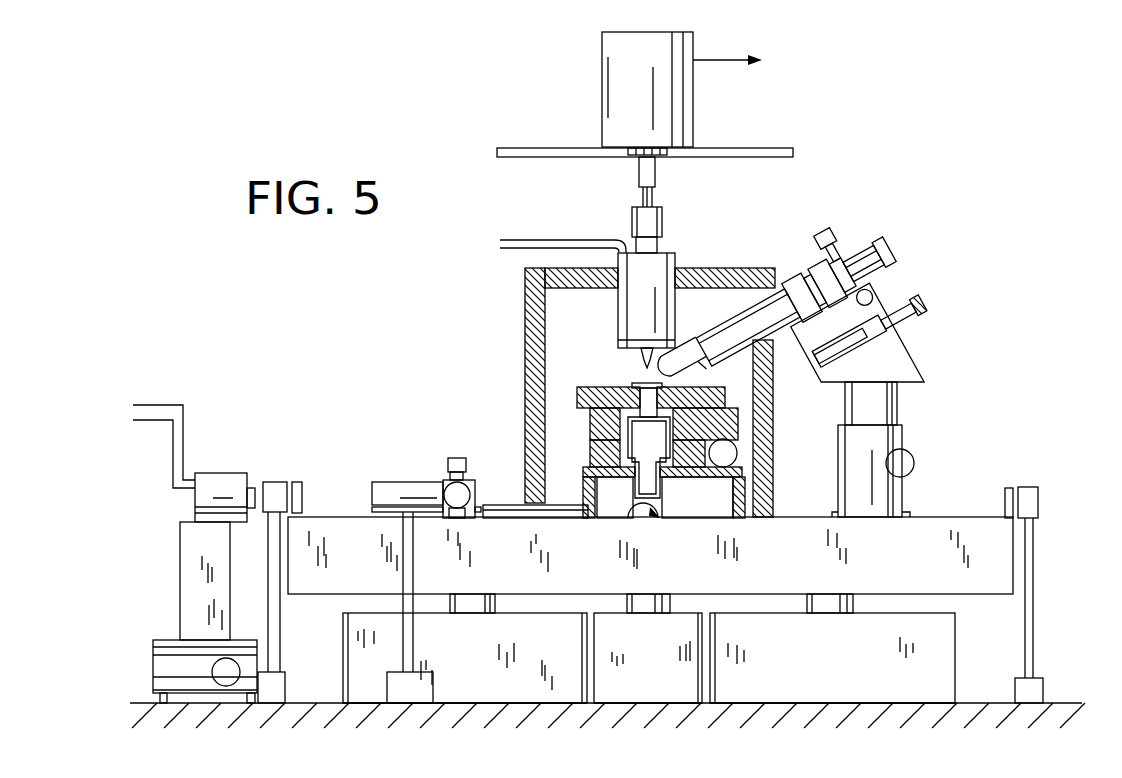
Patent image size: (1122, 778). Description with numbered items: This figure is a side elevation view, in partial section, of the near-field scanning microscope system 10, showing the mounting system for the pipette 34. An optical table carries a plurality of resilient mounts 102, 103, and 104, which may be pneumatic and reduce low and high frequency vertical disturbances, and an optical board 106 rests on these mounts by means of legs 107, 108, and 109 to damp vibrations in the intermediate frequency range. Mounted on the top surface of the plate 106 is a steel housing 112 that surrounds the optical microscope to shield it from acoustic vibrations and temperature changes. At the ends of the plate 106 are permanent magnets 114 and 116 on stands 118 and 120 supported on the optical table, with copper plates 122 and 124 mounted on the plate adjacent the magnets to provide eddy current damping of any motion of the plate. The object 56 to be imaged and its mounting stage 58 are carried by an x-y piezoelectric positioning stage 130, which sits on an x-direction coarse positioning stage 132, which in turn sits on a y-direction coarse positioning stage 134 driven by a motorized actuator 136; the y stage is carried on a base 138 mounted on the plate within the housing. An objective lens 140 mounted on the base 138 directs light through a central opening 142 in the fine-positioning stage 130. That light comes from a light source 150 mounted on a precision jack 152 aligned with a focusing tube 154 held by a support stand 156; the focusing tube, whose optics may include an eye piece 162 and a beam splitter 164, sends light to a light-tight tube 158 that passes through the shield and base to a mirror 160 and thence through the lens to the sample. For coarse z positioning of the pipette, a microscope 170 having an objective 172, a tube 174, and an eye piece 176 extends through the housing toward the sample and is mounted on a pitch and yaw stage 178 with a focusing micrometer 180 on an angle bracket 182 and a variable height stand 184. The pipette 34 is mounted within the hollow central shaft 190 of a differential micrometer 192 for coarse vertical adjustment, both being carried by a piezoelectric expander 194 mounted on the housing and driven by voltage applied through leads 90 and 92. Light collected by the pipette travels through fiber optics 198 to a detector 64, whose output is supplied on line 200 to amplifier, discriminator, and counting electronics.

The welding apparatus 10 is at (1067, 690).
The pipette 34 is at (641, 362).
The object to be imaged 56 is at (643, 386).
The mounting stage 58 is at (670, 382).
The detector 64 is at (602, 96).
The lead 90 is at (528, 240).
The lead 92 is at (513, 250).
The resilient mount 102 is at (510, 696).
The resilient mount 103 is at (650, 696).
The resilient mount 104 is at (840, 700).
The optical board 106 is at (1003, 561).
The leg 107 is at (468, 605).
The leg 108 is at (650, 605).
The leg 109 is at (825, 608).
The steel housing 112 is at (525, 360).
The permanent magnet 114 is at (272, 484).
The permanent magnet 116 is at (1030, 487).
The stand 118 is at (280, 615).
The stand 120 is at (1035, 621).
The copper plate 122 is at (300, 484).
The copper plate 124 is at (1005, 500).
The x-y piezoelectric positioning stage 130 is at (577, 395).
The x-direction coarse positioning stage 132 is at (590, 414).
The y-direction coarse positioning stage 134 is at (590, 452).
The motorized actuator 136 is at (745, 453).
The base 138 is at (748, 500).
The objective lens 140 is at (664, 483).
The central opening 142 is at (649, 457).
The light source 150 is at (213, 487).
The precision jack 152 is at (153, 663).
The focusing tube 154 is at (405, 484).
The support stand 156 is at (403, 618).
The light-tight tube 158 is at (558, 513).
The mirror 160 is at (627, 518).
The eye piece 162 is at (447, 470).
The beam splitter 164 is at (462, 508).
The microscope 170 is at (736, 300).
The objective 172 is at (688, 344).
The tube 174 is at (778, 300).
The eye piece 176 is at (840, 260).
The pitch and yaw stage 178 is at (886, 288).
The focusing micrometer 180 is at (912, 315).
The angle bracket 182 is at (912, 368).
The variable height stand 184 is at (893, 432).
The hollow central shaft 190 is at (658, 248).
The differential micrometer 192 is at (670, 215).
The piezoelectric expander 194 is at (618, 308).
The fiber optics 198 is at (641, 176).
The line 200 is at (721, 60).